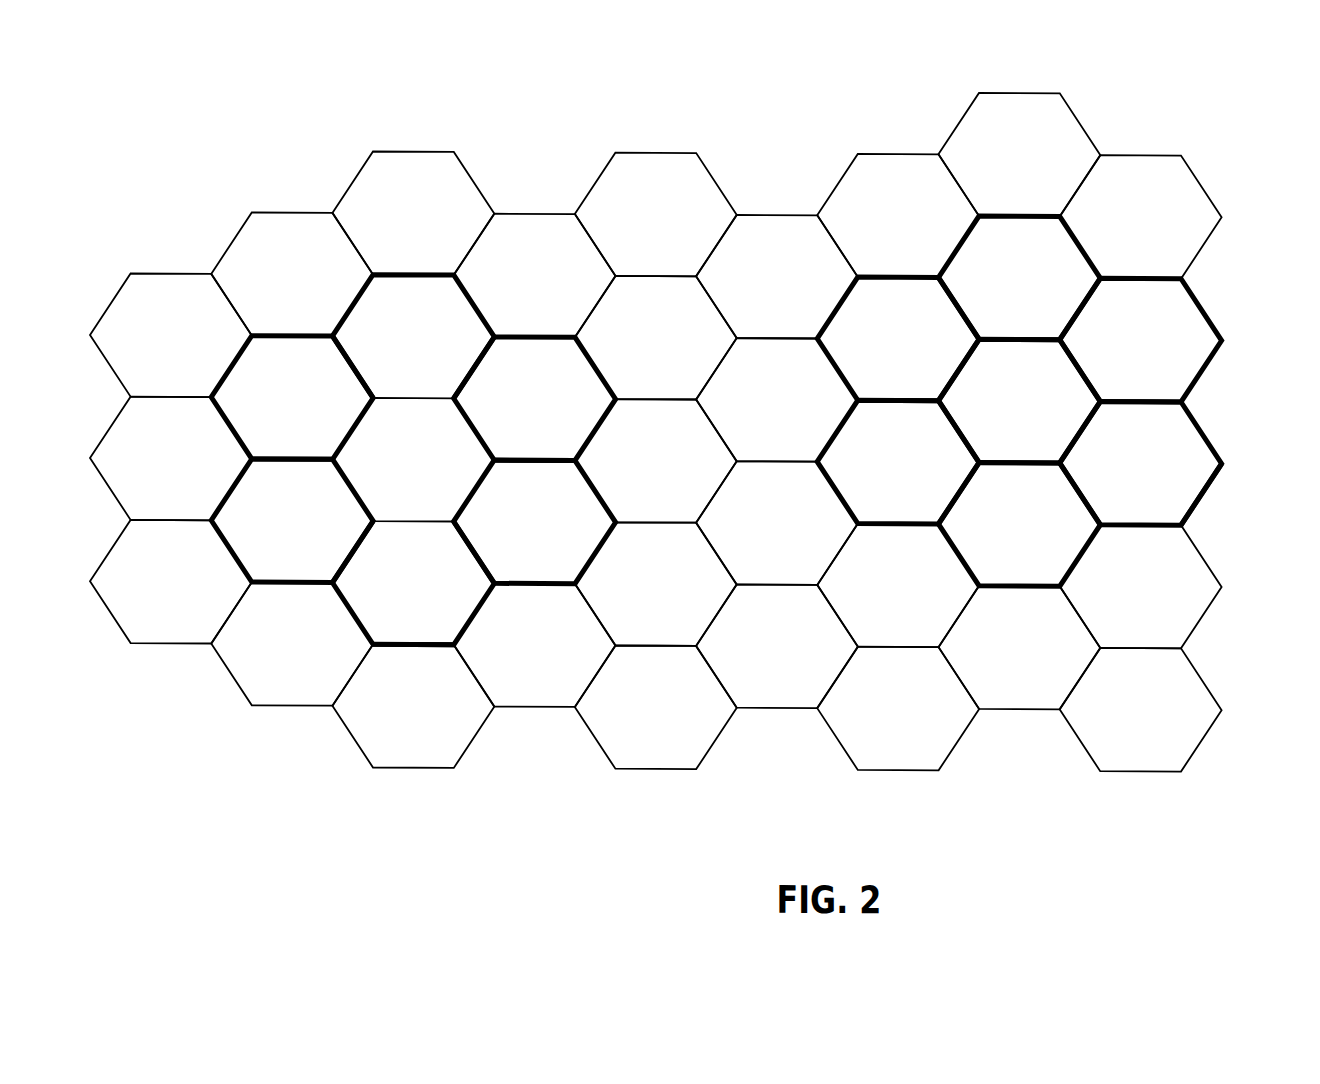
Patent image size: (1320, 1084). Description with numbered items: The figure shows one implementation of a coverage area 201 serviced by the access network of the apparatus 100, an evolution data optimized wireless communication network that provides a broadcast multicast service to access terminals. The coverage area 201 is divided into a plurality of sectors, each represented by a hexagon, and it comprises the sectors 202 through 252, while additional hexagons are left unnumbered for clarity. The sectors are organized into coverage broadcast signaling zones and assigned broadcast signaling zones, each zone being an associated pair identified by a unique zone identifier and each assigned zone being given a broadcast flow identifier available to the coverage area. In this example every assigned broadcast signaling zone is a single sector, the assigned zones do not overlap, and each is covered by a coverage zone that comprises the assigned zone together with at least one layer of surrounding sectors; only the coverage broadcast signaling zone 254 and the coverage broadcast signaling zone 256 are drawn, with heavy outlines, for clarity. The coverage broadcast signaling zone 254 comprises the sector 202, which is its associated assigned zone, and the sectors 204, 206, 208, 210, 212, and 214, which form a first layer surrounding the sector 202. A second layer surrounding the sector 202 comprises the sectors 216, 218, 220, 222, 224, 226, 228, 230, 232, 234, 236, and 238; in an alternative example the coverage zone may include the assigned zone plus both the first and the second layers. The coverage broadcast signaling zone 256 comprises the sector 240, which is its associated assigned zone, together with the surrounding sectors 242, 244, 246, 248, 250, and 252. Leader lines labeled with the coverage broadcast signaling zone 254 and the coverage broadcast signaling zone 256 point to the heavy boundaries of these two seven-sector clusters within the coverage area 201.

The apparatus 100 is at (83, 834).
The coverage area 201 is at (267, 833).
The sector 202 is at (413, 460).
The sector 204 is at (413, 583).
The sector 206 is at (535, 522).
The sector 208 is at (535, 399).
The sector 210 is at (413, 336).
The sector 212 is at (292, 397).
The sector 214 is at (292, 521).
The sector 216 is at (413, 706).
The sector 218 is at (535, 645).
The sector 220 is at (656, 584).
The sector 222 is at (656, 461).
The sector 224 is at (656, 338).
The sector 226 is at (535, 276).
The sector 228 is at (413, 213).
The sector 230 is at (292, 274).
The sector 232 is at (171, 335).
The sector 234 is at (171, 458).
The sector 236 is at (171, 582).
The sector 238 is at (292, 644).
The sector 240 is at (1019, 401).
The sector 242 is at (1019, 524).
The sector 244 is at (1141, 463).
The sector 246 is at (1141, 340).
The sector 248 is at (1019, 278).
The sector 250 is at (898, 339).
The sector 252 is at (898, 462).
The coverage broadcast signaling zone 254 is at (408, 645).
The coverage broadcast signaling zone 256 is at (1213, 481).